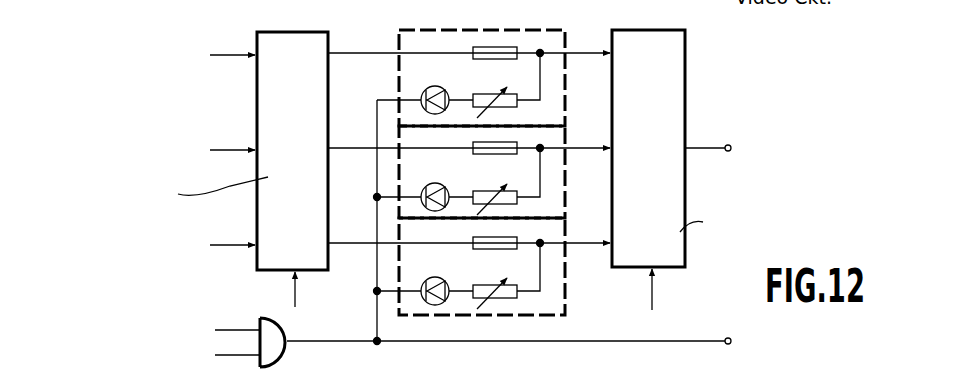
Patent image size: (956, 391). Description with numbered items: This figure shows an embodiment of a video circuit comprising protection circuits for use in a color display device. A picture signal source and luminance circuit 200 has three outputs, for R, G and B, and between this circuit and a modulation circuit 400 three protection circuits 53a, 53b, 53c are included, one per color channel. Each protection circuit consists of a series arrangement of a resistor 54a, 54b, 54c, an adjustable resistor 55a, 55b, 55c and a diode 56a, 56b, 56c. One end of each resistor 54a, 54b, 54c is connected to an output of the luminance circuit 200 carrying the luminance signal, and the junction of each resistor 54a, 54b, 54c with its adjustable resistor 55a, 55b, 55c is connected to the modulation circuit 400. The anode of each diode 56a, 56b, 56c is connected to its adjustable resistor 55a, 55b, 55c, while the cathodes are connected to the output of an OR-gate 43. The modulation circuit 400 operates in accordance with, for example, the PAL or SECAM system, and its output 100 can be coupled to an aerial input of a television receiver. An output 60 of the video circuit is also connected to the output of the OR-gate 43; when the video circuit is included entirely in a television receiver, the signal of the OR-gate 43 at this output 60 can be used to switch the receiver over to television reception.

The picture signal source and luminance circuit 200 is at (272, 97).
The modulation circuit 400 is at (697, 67).
The output of the modulation circuit 100 is at (727, 145).
The output of the video circuit 60 is at (727, 338).
The OR-gate 43 is at (282, 321).
The protection circuit 53a is at (522, 30).
The protection circuit 53b is at (566, 146).
The protection circuit 53c is at (566, 282).
The resistor 54a is at (476, 47).
The resistor 54b is at (476, 142).
The resistor 54c is at (476, 237).
The adjustable resistor 55a is at (487, 95).
The adjustable resistor 55b is at (488, 191).
The adjustable resistor 55c is at (487, 284).
The diode 56a is at (430, 90).
The diode 56b is at (430, 186).
The diode 56c is at (432, 280).